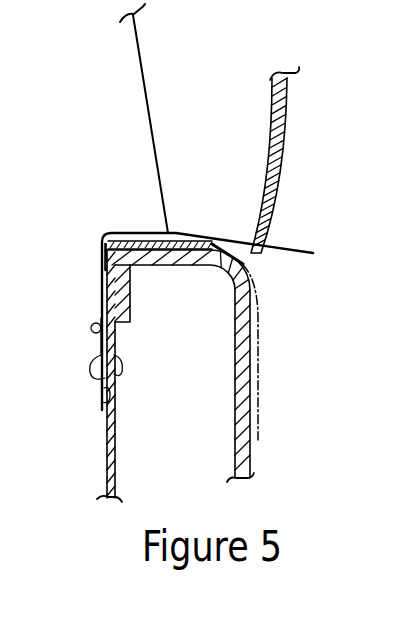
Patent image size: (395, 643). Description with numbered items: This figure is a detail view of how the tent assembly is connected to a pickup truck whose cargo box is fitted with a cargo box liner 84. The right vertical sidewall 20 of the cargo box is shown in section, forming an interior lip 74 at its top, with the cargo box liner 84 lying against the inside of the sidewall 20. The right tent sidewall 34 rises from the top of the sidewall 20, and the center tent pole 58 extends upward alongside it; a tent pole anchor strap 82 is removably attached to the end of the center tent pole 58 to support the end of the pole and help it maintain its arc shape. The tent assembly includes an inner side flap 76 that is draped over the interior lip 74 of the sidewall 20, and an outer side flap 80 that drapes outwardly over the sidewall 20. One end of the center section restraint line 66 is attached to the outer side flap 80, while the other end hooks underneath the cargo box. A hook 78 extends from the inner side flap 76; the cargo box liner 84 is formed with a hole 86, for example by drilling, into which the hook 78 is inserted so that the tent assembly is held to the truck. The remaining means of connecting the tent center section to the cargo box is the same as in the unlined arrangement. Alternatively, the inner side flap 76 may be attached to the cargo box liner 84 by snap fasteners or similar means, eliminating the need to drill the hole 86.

The right vertical sidewall 20 is at (238, 368).
The right tent sidewall 34 is at (142, 55).
The center tent pole 58 is at (287, 149).
The center section restraint line 66 is at (258, 386).
The interior lip 74 is at (131, 311).
The inner side flap 76 is at (118, 231).
The hook 78 is at (93, 356).
The outer side flap 80 is at (213, 242).
The tent pole anchor strap 82 is at (240, 242).
The cargo box liner 84 is at (107, 436).
The hole 86 is at (104, 389).